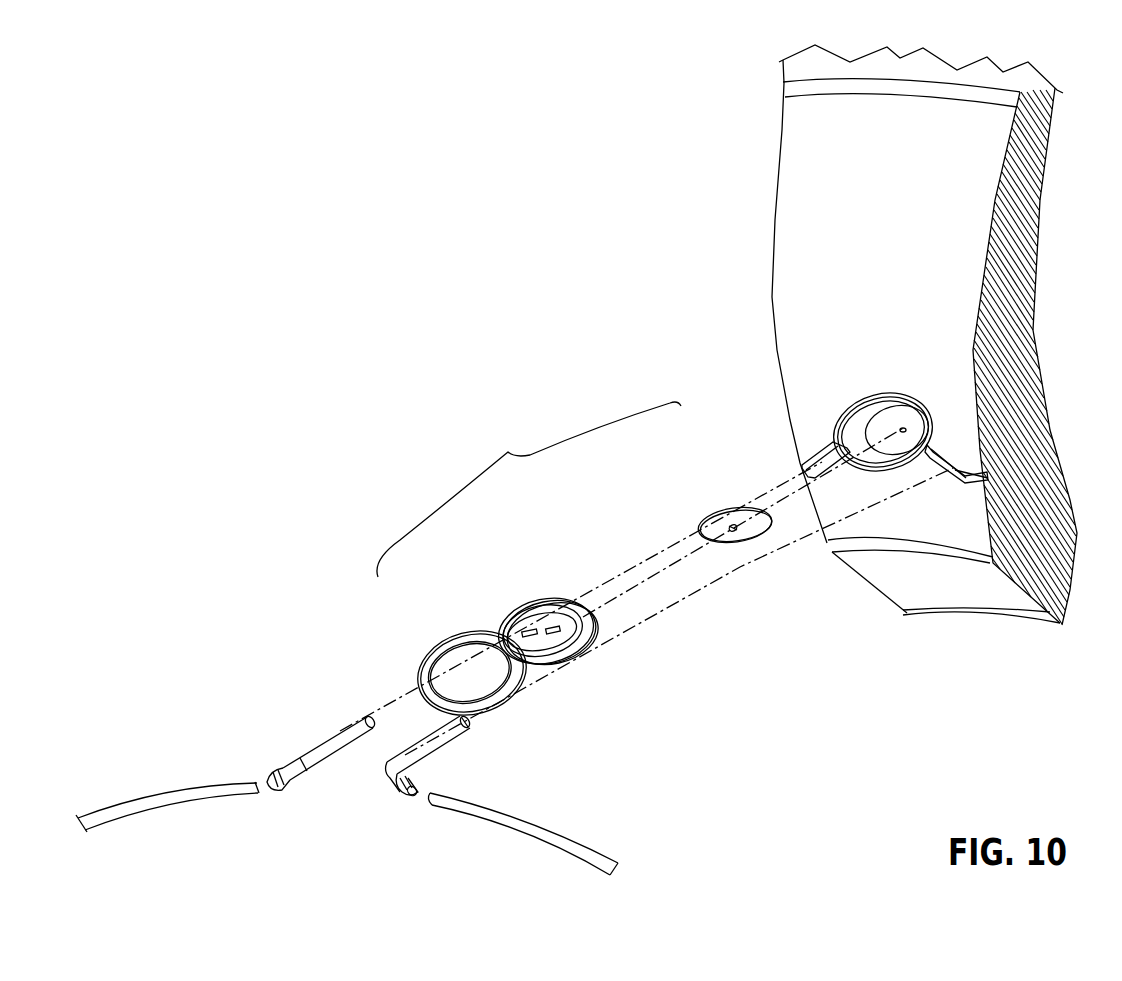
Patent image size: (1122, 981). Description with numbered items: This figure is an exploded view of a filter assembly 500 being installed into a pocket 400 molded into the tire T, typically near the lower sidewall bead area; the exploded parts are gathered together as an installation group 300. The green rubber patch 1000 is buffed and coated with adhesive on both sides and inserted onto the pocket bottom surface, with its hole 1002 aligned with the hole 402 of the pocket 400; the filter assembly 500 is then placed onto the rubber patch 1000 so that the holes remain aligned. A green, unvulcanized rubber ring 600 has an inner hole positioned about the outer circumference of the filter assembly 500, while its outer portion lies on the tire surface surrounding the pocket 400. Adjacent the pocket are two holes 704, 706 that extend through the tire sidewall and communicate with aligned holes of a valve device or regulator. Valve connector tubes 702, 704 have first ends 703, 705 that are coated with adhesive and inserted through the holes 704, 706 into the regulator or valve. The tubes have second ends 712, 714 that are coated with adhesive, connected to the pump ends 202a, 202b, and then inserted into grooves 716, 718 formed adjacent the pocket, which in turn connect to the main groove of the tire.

The tank wall T is at (1033, 337).
The connector assembly 300 is at (529, 489).
The green rubber ring 600 is at (432, 640).
The filter assembly 500 is at (593, 627).
The green rubber patch 1000 is at (723, 508).
The hole 1002 is at (737, 528).
The pocket 400 is at (866, 378).
The hole 402 is at (897, 428).
The hole 704 is at (417, 752).
The first end 705 is at (465, 727).
The valve connector tube 702 is at (313, 747).
The first end 703 is at (365, 716).
The second end 712 is at (272, 777).
The second end 714 is at (405, 798).
The groove 716 is at (810, 460).
The hole 706 is at (933, 447).
The groove 718 is at (955, 480).
The pump end 202a is at (258, 792).
The pump end 202b is at (427, 800).